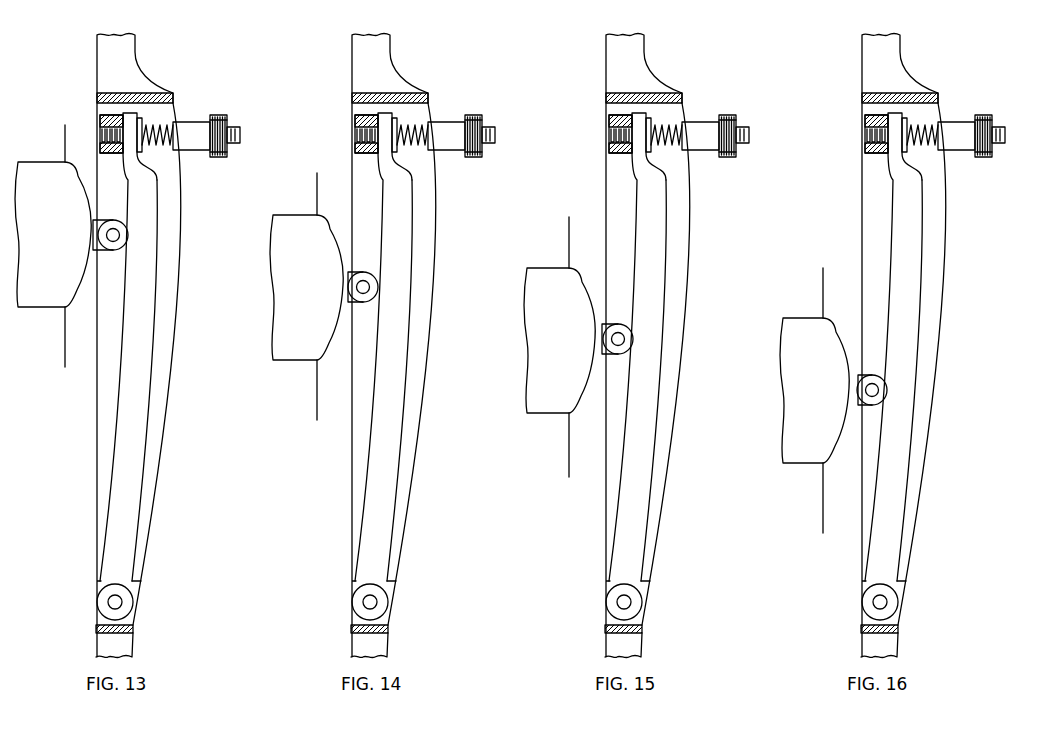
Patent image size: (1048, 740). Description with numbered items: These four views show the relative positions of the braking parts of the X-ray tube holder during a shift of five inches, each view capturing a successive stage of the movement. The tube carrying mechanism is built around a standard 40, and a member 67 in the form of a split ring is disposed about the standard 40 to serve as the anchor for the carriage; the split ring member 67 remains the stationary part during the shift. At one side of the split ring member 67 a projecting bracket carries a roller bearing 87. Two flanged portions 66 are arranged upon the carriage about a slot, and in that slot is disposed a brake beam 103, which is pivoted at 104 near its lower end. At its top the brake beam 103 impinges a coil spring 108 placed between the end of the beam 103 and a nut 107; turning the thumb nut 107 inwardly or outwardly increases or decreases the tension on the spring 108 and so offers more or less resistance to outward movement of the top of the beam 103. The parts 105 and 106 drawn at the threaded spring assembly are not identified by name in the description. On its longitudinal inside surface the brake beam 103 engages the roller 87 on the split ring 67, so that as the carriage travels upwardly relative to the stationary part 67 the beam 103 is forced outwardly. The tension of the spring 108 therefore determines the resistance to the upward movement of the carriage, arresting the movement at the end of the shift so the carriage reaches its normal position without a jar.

In FIG. 13, the standard 40 is at (65, 367).
In FIG. 14, the standard 40 is at (317, 316).
In FIG. 15, the standard 40 is at (571, 366).
In FIG. 16, the standard 40 is at (824, 416).
In FIG. 13, the flanged portions 66 is at (174, 302).
In FIG. 14, the flanged portions 66 is at (427, 364).
In FIG. 15, the flanged portions 66 is at (688, 364).
In FIG. 16, the flanged portions 66 is at (943, 364).
In FIG. 13, the split ring member 67 is at (30, 164).
In FIG. 14, the split ring member 67 is at (303, 303).
In FIG. 15, the split ring member 67 is at (552, 357).
In FIG. 16, the split ring member 67 is at (808, 410).
In FIG. 13, the roller bearing 87 is at (127, 250).
In FIG. 14, the roller bearing 87 is at (406, 301).
In FIG. 15, the roller bearing 87 is at (663, 352).
In FIG. 16, the roller bearing 87 is at (914, 398).
In FIG. 13, the brake beam 103 is at (152, 212).
In FIG. 14, the brake beam 103 is at (415, 347).
In FIG. 15, the brake beam 103 is at (674, 347).
In FIG. 16, the brake beam 103 is at (932, 347).
In FIG. 13, the pivot 104 is at (112, 603).
In FIG. 14, the pivot 104 is at (346, 602).
In FIG. 15, the pivot 104 is at (601, 602).
In FIG. 16, the pivot 104 is at (856, 602).
In FIG. 13, the adjusting screw 105 is at (242, 135).
In FIG. 14, the adjusting screw 105 is at (487, 136).
In FIG. 15, the adjusting screw 105 is at (744, 136).
In FIG. 16, the adjusting screw 105 is at (991, 136).
In FIG. 13, the threaded bushing 106 is at (100, 120).
In FIG. 14, the threaded bushing 106 is at (344, 119).
In FIG. 15, the threaded bushing 106 is at (597, 119).
In FIG. 16, the threaded bushing 106 is at (852, 119).
In FIG. 13, the thumb nut 107 is at (222, 158).
In FIG. 14, the thumb nut 107 is at (488, 150).
In FIG. 15, the thumb nut 107 is at (744, 150).
In FIG. 16, the thumb nut 107 is at (996, 150).
In FIG. 13, the coil spring 108 is at (163, 127).
In FIG. 14, the coil spring 108 is at (433, 119).
In FIG. 15, the coil spring 108 is at (692, 119).
In FIG. 16, the coil spring 108 is at (945, 119).